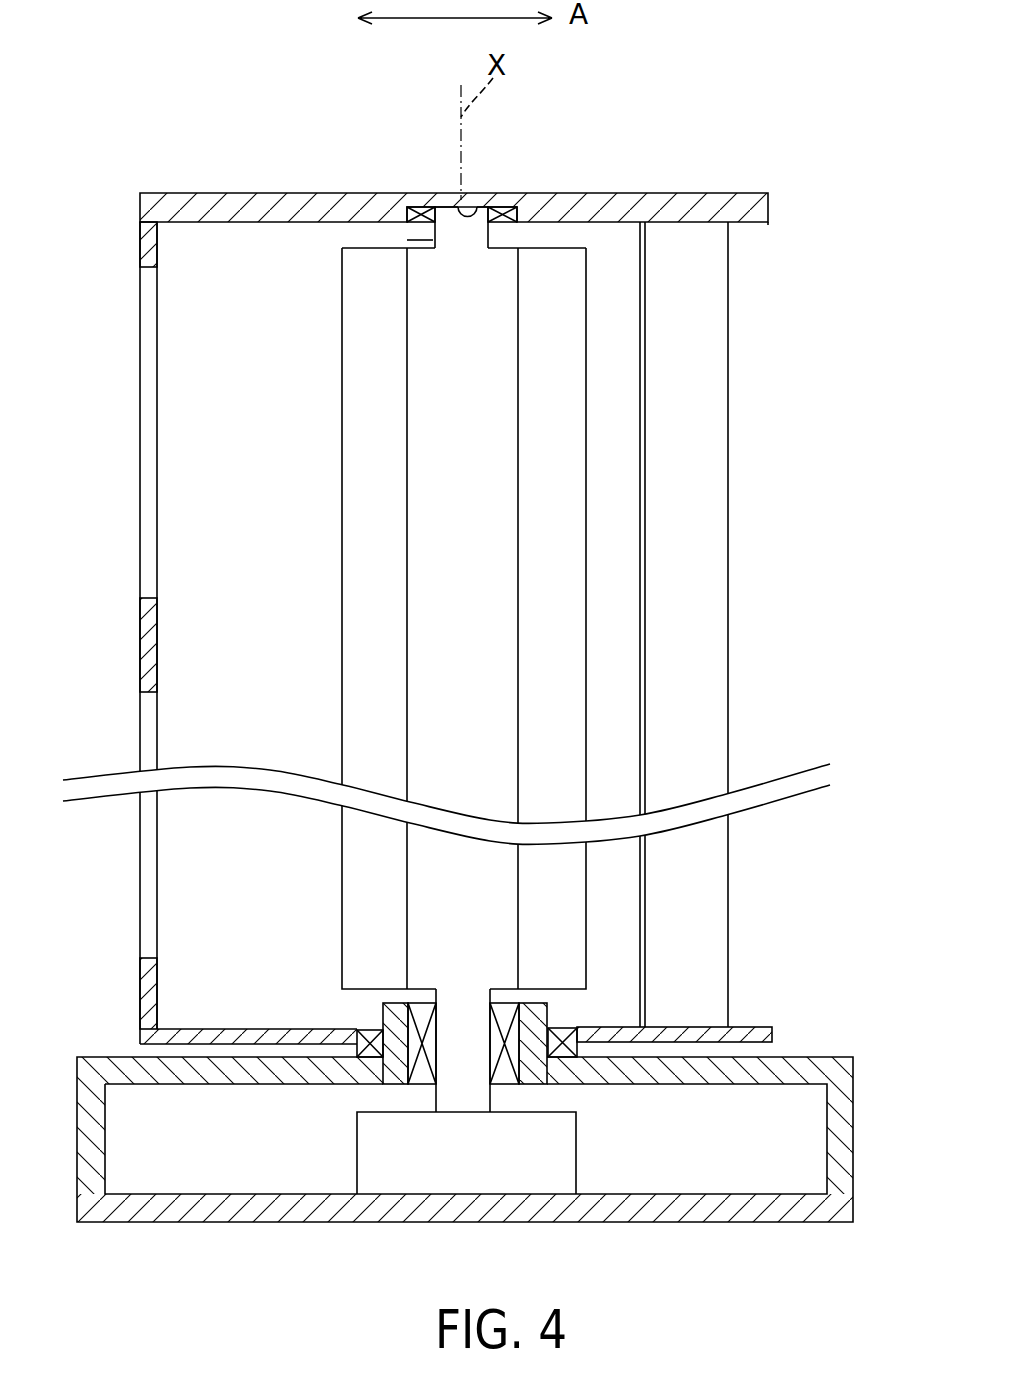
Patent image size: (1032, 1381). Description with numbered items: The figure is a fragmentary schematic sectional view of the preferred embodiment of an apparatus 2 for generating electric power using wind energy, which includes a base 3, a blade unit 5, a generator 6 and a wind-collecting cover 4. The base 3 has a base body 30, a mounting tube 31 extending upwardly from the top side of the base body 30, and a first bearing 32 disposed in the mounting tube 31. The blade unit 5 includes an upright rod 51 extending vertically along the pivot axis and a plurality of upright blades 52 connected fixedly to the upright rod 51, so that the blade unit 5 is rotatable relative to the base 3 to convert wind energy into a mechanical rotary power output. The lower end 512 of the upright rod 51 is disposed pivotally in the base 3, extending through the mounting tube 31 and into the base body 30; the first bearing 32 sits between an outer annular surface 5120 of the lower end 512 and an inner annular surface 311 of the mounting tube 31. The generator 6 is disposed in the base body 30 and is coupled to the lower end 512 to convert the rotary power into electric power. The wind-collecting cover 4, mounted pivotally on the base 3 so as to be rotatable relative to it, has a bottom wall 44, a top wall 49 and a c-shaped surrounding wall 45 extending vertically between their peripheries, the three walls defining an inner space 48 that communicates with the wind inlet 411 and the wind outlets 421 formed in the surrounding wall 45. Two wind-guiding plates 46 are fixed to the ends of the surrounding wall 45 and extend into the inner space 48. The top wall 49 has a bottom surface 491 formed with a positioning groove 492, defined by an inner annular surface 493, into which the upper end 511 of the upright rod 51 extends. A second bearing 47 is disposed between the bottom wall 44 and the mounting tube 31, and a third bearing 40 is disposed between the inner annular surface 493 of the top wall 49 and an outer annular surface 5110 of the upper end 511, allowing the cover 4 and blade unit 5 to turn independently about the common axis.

The apparatus 2 is at (652, 160).
The base 3 is at (242, 1224).
The base body 30 is at (855, 1087).
The mounting tube 31 is at (550, 1018).
The inner annular surface 311 is at (383, 1020).
The first bearing 32 is at (420, 1004).
The wind-collecting cover 4 is at (698, 192).
The third bearing 40 is at (507, 195).
The wind inlet 411 is at (742, 620).
The wind outlets 421 is at (150, 498).
The bottom wall 44 is at (218, 1047).
The surrounding wall 45 is at (142, 655).
The wind-guiding plates 46 is at (713, 457).
The second bearing 47 is at (355, 1047).
The inner space 48 is at (193, 350).
The top wall 49 is at (265, 194).
The bottom surface 491 is at (700, 222).
The positioning groove 492 is at (473, 204).
The inner annular surface 493 is at (397, 204).
The blade unit 5 is at (341, 565).
The upright rod 51 is at (407, 535).
The upper end 511 is at (453, 253).
The outer annular surface 5110 is at (432, 240).
The lower end 512 is at (480, 1098).
The outer annular surface 5120 is at (437, 1056).
The upright blades 52 is at (342, 430).
The generator 6 is at (577, 1155).